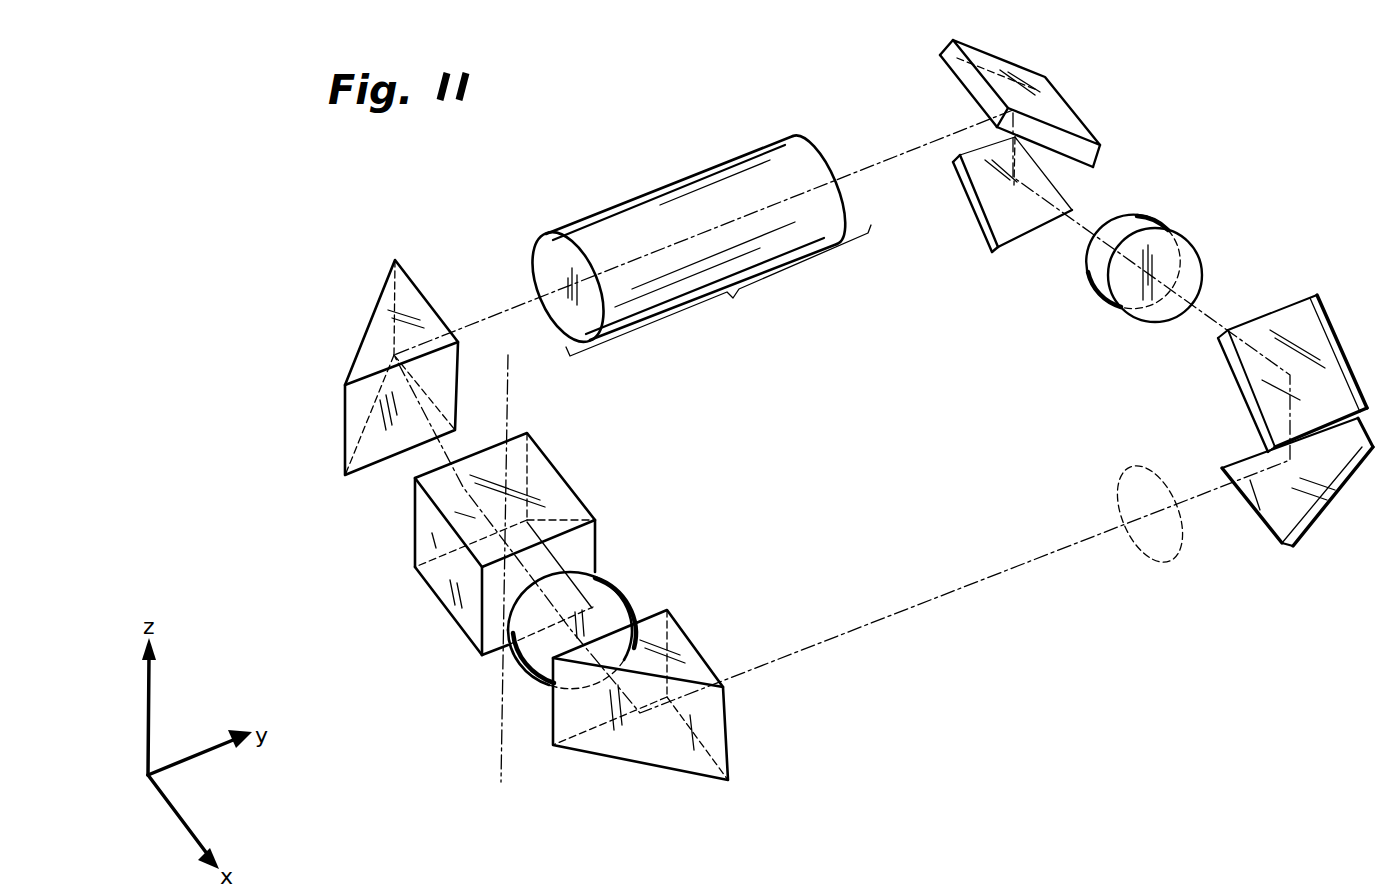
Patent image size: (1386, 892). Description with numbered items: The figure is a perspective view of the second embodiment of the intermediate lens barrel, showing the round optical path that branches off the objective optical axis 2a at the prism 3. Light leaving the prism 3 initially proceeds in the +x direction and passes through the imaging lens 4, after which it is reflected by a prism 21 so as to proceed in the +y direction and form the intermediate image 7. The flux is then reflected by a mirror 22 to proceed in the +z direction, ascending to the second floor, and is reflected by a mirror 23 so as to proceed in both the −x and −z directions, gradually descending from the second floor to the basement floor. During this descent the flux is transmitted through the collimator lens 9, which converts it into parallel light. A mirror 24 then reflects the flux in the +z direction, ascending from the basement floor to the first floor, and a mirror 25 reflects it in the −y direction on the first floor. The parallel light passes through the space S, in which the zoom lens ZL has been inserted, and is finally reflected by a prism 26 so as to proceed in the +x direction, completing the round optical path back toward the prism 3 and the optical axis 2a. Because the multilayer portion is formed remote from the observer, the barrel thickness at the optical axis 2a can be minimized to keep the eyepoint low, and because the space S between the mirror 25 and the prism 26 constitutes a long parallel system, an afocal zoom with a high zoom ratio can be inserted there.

The optical axis 2a is at (500, 754).
The prism 3 is at (444, 582).
The imaging lens 4 is at (623, 601).
The intermediate image 7 is at (1172, 558).
The collimator lens 9 is at (1138, 224).
The prism 21 is at (644, 752).
The mirror 22 is at (1327, 473).
The mirror 23 is at (1236, 385).
The mirror 24 is at (1021, 220).
The mirror 25 is at (962, 82).
The prism 26 is at (375, 331).
The zoom lens ZL is at (640, 197).
The space S is at (718, 290).